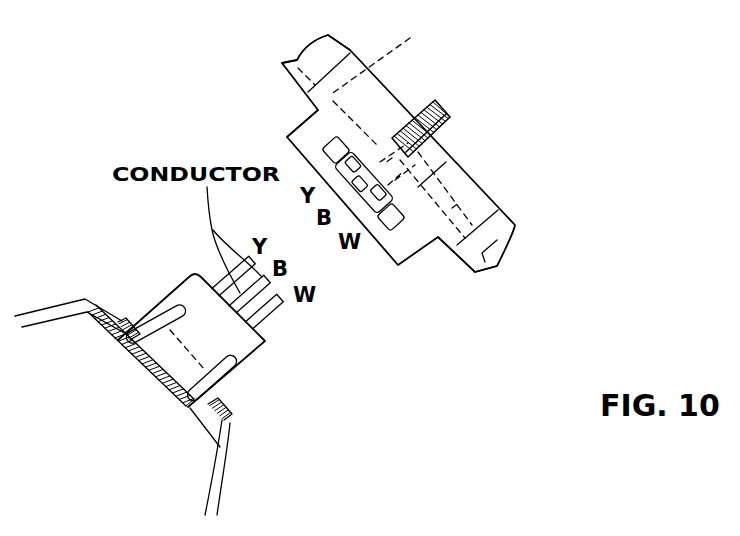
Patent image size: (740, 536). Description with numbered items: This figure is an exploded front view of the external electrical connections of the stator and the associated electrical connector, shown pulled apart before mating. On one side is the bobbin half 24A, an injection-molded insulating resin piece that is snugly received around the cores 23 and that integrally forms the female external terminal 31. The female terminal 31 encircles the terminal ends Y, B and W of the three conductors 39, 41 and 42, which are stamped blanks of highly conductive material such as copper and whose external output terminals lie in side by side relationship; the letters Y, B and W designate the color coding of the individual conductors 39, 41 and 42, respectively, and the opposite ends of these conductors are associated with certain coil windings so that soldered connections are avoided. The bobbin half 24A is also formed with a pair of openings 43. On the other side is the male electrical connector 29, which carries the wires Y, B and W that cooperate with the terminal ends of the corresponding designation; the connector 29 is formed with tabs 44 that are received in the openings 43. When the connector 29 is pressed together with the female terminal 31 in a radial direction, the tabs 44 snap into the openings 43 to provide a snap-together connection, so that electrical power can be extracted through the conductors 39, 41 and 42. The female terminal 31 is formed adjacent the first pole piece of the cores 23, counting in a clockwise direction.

The core 23 is at (449, 116).
The bobbin half 24A is at (514, 226).
The male electrical connector 29 is at (262, 357).
The female external terminal 31 is at (288, 137).
The conductor 39 is at (362, 81).
The conductor 41 is at (465, 202).
The conductor 42 is at (460, 274).
The opening 43 is at (327, 150).
The tab 44 is at (157, 305).